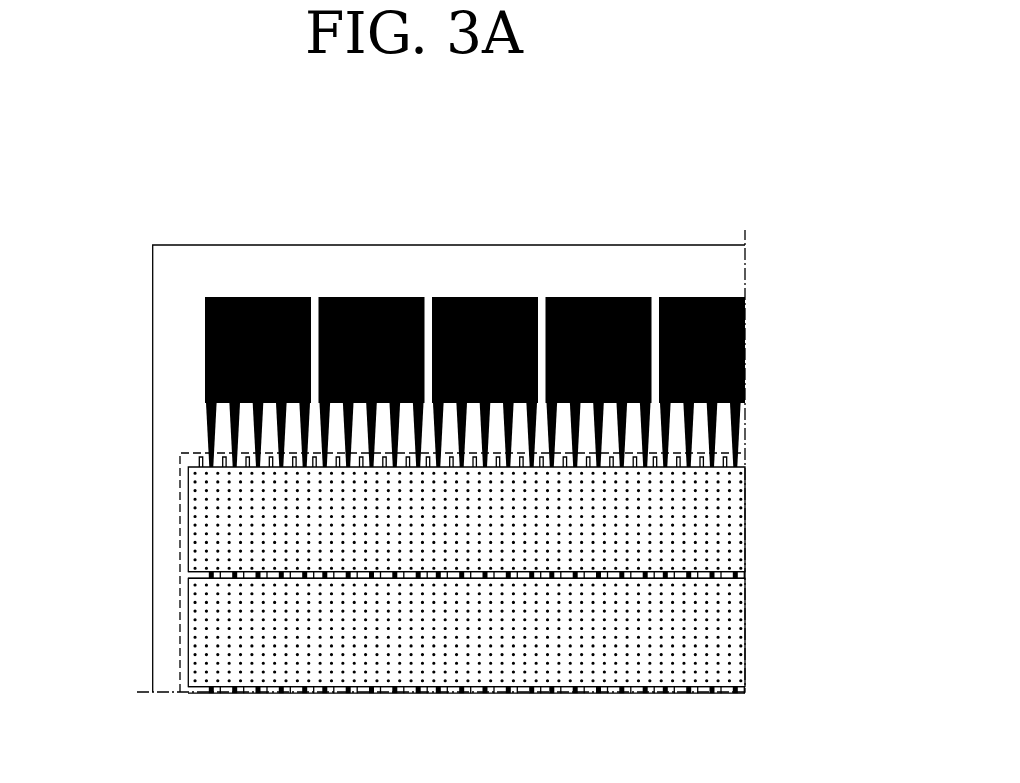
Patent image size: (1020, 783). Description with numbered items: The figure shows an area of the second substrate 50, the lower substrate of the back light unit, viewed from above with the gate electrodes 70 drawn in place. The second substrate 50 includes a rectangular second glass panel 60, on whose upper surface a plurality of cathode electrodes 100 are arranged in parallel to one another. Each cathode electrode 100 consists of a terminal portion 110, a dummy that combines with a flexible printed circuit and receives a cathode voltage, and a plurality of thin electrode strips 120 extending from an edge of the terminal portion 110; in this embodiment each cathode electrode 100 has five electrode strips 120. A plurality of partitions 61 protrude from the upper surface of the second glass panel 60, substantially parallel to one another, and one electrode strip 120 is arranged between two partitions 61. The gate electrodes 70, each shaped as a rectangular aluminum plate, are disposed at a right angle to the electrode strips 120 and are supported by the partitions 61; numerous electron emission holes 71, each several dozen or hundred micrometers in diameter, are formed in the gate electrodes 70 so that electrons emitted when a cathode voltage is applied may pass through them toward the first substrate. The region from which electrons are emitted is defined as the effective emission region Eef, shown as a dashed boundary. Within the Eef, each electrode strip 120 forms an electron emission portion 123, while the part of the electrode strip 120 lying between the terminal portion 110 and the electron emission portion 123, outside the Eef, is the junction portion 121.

The second substrate 50 is at (258, 145).
The second glass panel 60 is at (167, 255).
The partitions 61 is at (193, 690).
The gate electrodes 70 is at (494, 577).
The electron emission holes 71 is at (730, 543).
The cathode electrodes 100 is at (420, 298).
The terminal portion 110 is at (204, 346).
The electrode strips 120 is at (392, 577).
The junction portion 121 is at (205, 422).
The electron emission portion 123 is at (190, 575).
The effective emission region Eef is at (180, 628).